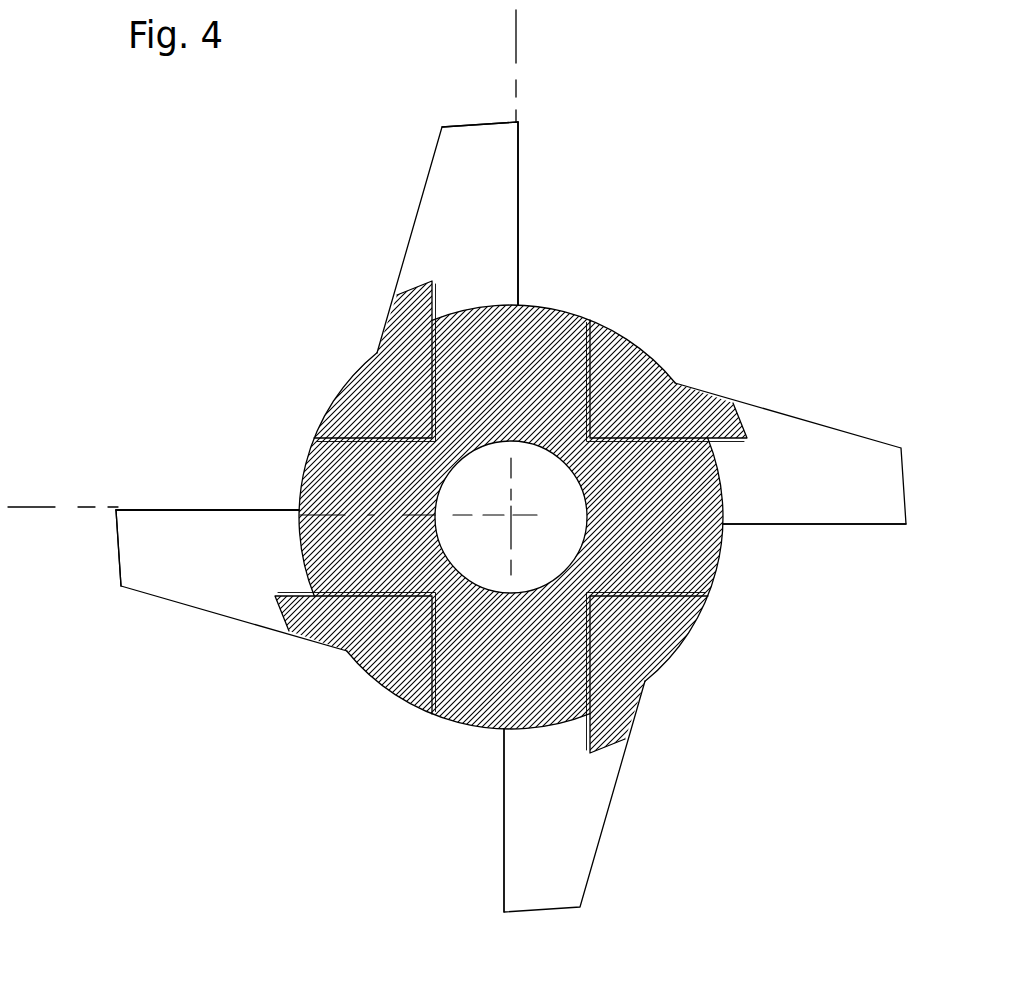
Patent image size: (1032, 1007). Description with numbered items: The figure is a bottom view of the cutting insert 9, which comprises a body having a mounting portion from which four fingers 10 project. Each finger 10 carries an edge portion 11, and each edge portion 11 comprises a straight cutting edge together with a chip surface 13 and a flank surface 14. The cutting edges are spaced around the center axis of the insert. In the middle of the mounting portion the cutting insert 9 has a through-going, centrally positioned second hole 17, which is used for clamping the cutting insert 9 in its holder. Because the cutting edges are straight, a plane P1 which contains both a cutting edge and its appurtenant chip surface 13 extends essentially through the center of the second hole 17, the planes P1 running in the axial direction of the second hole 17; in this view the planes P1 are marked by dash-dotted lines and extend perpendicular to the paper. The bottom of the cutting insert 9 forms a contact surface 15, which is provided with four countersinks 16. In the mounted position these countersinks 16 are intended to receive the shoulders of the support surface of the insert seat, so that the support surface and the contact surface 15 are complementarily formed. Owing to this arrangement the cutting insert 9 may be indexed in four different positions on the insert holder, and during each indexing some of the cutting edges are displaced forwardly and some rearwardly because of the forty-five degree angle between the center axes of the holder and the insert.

The cutting insert 9 is at (332, 317).
The finger 10 is at (422, 190).
The edge portion 11 is at (527, 137).
The chip surface 13 is at (517, 195).
The flank surface 14 is at (472, 122).
The contact surface 15 is at (685, 557).
The countersink 16 is at (633, 390).
The second hole 17 is at (482, 560).
The plane P1 is at (516, 53).